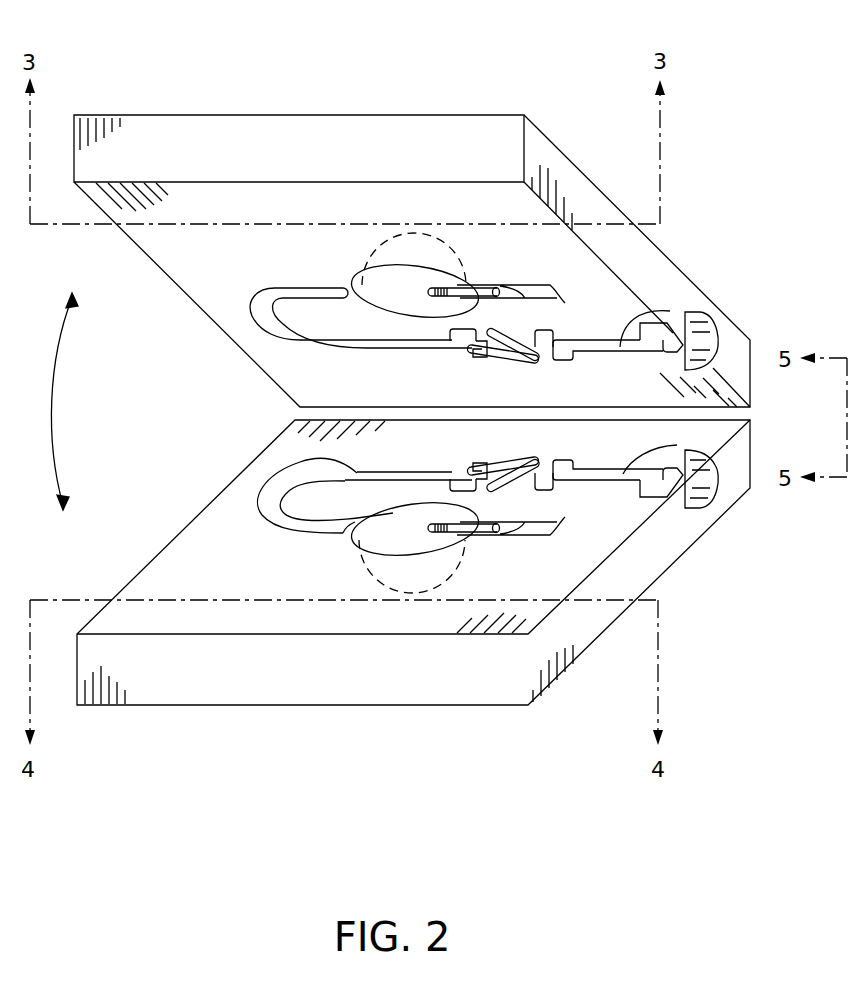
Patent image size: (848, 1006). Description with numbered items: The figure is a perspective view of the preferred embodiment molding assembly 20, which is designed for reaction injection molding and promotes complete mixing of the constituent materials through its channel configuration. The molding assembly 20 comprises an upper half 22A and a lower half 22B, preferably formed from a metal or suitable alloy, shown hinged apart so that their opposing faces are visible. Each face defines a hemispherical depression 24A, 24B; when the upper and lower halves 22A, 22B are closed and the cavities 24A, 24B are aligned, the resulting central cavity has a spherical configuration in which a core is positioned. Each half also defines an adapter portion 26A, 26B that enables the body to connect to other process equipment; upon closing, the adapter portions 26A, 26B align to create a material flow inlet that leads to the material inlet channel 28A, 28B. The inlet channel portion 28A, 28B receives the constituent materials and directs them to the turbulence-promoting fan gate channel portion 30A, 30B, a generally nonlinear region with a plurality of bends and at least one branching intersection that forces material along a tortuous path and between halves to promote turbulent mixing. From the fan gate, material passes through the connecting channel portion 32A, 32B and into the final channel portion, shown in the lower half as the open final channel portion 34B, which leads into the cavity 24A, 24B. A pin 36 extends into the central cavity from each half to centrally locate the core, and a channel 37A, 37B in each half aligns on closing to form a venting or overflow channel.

The molding assembly 20 is at (730, 713).
The upper half 22A is at (138, 115).
The lower half 22B is at (118, 706).
The hemispherical depression 24A is at (397, 267).
The hemispherical depression 24B is at (417, 559).
The adapter portion 26A is at (707, 350).
The adapter portion 26B is at (703, 480).
The material inlet channel 28A is at (670, 311).
The material inlet channel 28B is at (677, 445).
The turbulence-promoting fan gate channel portion 30A is at (562, 336).
The turbulence-promoting fan gate channel portion 30B is at (548, 481).
The connecting channel portion 32A is at (368, 348).
The connecting channel portion 32B is at (357, 477).
The final channel portion 34B is at (341, 533).
The pin 36 is at (467, 292).
The channel 37A is at (527, 284).
The channel 37B is at (525, 540).